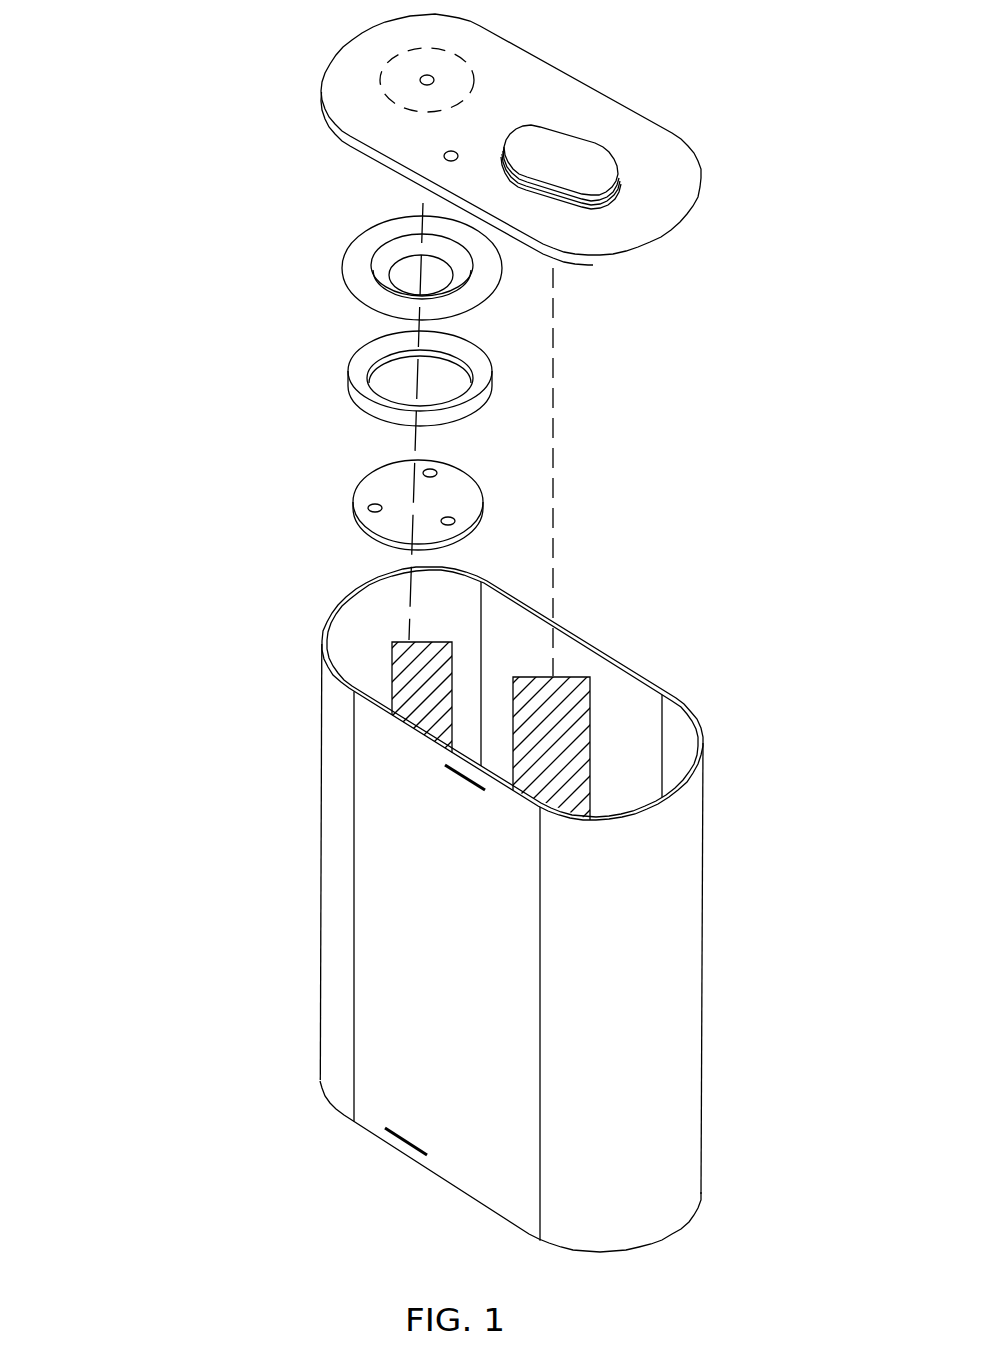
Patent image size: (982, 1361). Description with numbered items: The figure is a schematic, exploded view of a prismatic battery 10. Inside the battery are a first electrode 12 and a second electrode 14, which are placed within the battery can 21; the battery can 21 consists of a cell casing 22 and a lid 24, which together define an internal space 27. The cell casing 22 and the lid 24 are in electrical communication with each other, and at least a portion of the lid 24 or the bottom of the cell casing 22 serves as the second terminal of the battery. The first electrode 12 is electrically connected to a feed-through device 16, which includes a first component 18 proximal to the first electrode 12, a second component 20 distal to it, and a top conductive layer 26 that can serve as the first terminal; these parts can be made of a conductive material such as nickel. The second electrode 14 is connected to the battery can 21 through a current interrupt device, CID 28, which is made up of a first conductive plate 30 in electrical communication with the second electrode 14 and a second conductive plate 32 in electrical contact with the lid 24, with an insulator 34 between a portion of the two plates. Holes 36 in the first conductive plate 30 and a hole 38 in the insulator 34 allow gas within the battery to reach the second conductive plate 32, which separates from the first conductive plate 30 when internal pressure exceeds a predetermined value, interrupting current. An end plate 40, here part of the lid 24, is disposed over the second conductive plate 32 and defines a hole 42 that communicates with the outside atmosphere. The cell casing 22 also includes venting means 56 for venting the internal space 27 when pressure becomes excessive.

The battery 10 is at (108, 60).
The first electrode 12 is at (580, 728).
The second electrode 14 is at (397, 648).
The feed-through device 16 is at (632, 181).
The first component 18 is at (598, 210).
The second component 20 is at (622, 181).
The battery can 21 is at (762, 297).
The cell casing 22 is at (372, 1141).
The lid 24 is at (688, 242).
The top conductive layer 26 is at (567, 163).
The internal space 27 is at (612, 685).
The CID 28 is at (358, 370).
The first conductive plate 30 is at (409, 491).
The second conductive plate 32 is at (354, 240).
The insulator 34 is at (413, 370).
The holes 36 is at (456, 521).
The hole 38 is at (458, 388).
The end plate 40 is at (445, 50).
The hole 42 is at (420, 78).
The venting means 56 is at (465, 778).